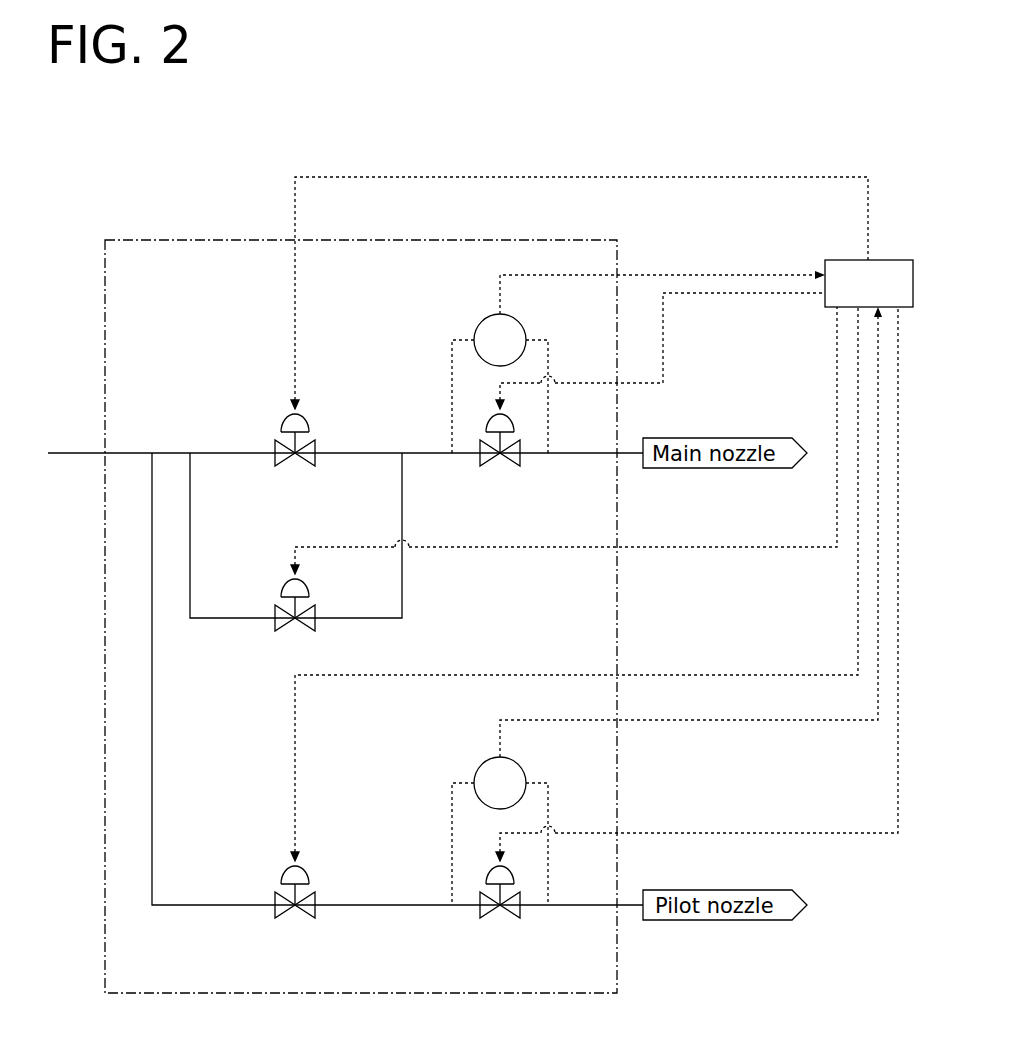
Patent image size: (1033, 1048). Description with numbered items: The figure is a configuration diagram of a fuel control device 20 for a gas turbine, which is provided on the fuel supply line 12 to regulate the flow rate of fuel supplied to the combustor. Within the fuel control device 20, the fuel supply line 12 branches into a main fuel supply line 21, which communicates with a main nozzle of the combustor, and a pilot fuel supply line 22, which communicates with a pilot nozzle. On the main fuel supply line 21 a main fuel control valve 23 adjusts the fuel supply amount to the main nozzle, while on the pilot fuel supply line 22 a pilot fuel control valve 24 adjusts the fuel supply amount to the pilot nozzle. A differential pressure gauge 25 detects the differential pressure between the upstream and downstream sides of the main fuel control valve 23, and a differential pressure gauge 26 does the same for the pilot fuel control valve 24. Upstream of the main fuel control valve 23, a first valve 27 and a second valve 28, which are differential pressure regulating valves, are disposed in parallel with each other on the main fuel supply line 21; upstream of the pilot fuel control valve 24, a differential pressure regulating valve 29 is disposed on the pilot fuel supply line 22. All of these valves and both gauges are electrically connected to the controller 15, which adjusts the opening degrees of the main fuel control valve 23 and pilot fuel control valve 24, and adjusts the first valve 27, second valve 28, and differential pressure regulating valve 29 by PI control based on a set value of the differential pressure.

The fuel supply line 12 is at (75, 453).
The controller 15 is at (887, 260).
The fuel control device 20 is at (210, 240).
The main fuel supply line 21 is at (171, 453).
The pilot fuel supply line 22 is at (209, 905).
The main fuel control valve 23 is at (488, 466).
The pilot fuel control valve 24 is at (488, 918).
The differential pressure gauge 25 is at (522, 326).
The differential pressure gauge 26 is at (522, 769).
The first valve 27 is at (283, 466).
The second valve 28 is at (283, 631).
The differential pressure regulating valve 29 is at (283, 918).